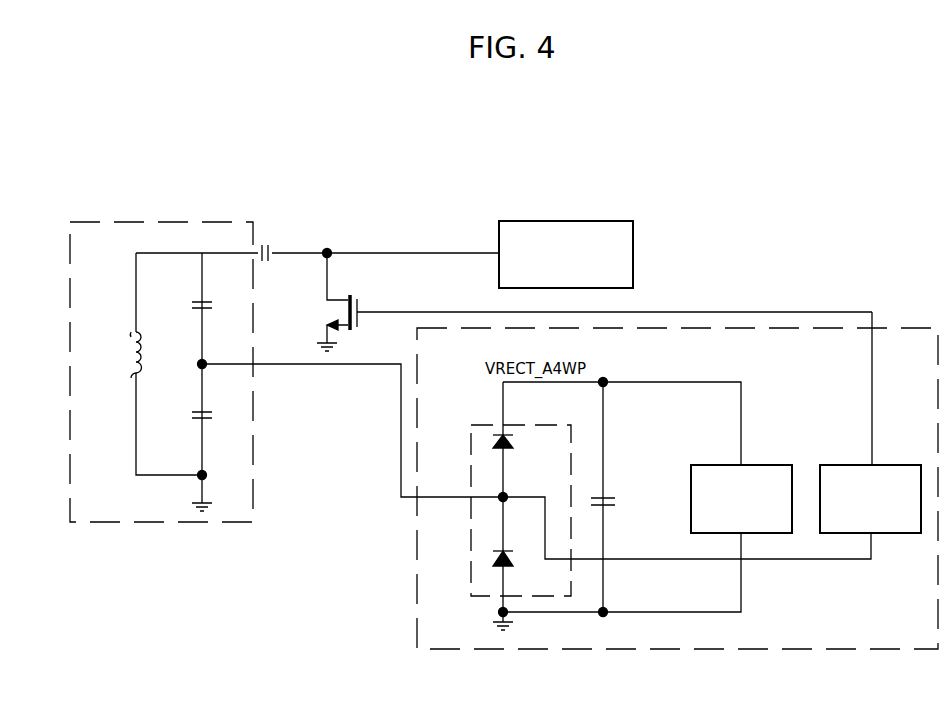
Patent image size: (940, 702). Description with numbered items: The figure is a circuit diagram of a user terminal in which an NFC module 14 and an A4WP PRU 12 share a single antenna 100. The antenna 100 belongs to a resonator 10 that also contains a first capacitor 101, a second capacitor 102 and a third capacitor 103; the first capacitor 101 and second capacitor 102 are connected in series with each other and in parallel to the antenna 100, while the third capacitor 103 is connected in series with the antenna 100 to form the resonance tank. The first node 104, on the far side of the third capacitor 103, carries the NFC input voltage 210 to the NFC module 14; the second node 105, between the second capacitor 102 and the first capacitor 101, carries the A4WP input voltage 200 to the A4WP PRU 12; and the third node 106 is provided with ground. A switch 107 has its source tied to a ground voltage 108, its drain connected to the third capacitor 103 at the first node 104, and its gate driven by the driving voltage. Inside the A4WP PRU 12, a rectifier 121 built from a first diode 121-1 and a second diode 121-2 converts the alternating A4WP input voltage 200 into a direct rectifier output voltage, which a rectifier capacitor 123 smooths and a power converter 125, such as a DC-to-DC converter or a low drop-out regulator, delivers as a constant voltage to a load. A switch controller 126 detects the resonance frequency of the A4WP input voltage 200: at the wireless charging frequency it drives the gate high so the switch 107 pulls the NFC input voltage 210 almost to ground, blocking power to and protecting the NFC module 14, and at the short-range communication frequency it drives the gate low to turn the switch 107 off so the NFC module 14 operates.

The resonator 10 is at (165, 222).
The antenna 100 is at (128, 348).
The first capacitor Ca 101 is at (196, 413).
The second capacitor Cb 102 is at (205, 304).
The third capacitor Cc 103 is at (273, 251).
The node (A) 104 is at (331, 250).
The node (B) 105 is at (206, 362).
The node (C) 106 is at (206, 473).
The switch SW 107 is at (357, 297).
The ground voltage 108 is at (340, 346).
The input voltage IN_NFC 210 is at (433, 232).
The NFC module 14 is at (636, 253).
The A4WP PRU 12 is at (900, 327).
The rectifier 121 is at (521, 497).
The diode D1 121-1 is at (509, 566).
The diode D2 121-2 is at (509, 449).
The input voltage IN_A4WP 200 is at (436, 472).
The rectifier capacitor CRECT 123 is at (605, 499).
The power converter 125 is at (743, 464).
The switch controller 126 is at (873, 464).